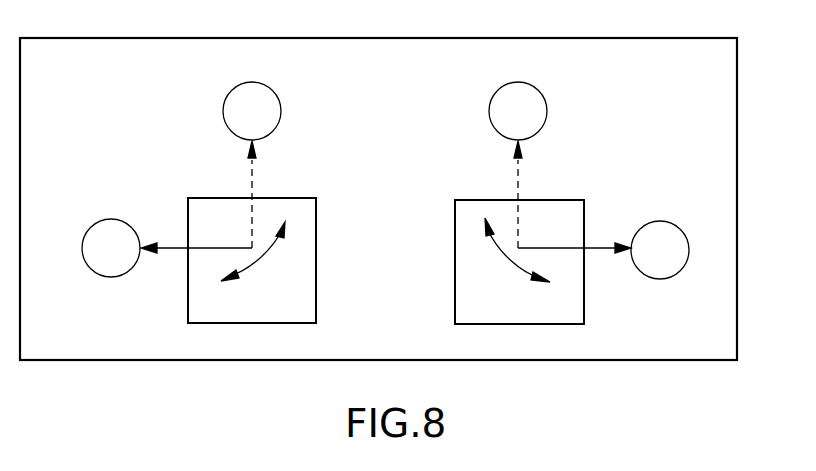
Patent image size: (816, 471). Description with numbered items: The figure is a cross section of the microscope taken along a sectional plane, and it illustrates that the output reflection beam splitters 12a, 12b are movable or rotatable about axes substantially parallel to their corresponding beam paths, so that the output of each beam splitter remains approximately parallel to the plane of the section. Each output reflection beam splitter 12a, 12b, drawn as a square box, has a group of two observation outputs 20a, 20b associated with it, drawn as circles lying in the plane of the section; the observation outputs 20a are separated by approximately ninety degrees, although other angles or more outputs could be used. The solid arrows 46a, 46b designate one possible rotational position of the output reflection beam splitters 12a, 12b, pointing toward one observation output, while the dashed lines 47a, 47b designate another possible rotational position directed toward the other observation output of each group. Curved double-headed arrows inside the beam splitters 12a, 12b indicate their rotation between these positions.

The output reflection beam splitter 12a is at (302, 311).
The output reflection beam splitter 12b is at (505, 312).
The observation outputs 20a is at (110, 219).
The observation outputs 20b is at (547, 111).
The solid arrow 46a is at (176, 247).
The solid arrow 46b is at (600, 250).
The dashed line 47a is at (252, 170).
The dashed line 47b is at (518, 170).